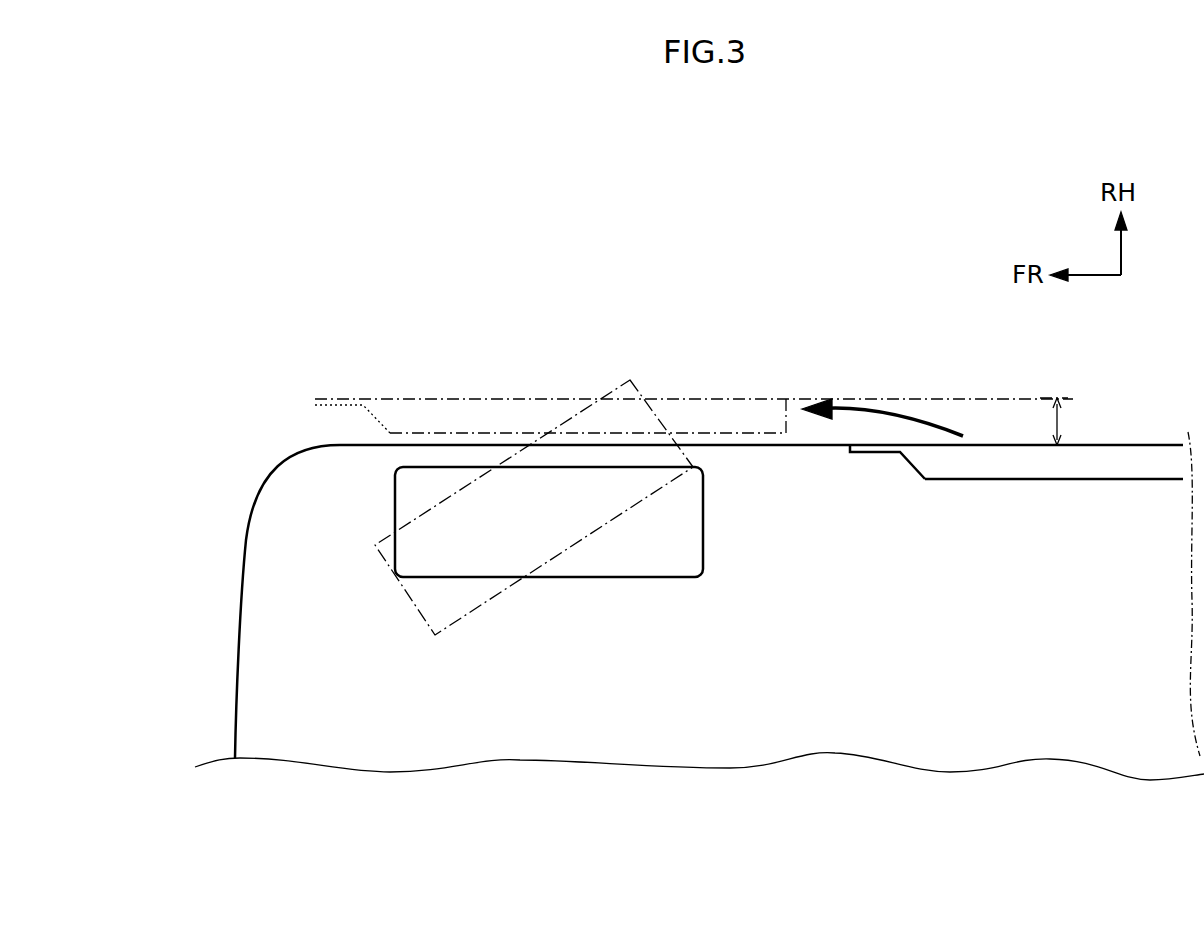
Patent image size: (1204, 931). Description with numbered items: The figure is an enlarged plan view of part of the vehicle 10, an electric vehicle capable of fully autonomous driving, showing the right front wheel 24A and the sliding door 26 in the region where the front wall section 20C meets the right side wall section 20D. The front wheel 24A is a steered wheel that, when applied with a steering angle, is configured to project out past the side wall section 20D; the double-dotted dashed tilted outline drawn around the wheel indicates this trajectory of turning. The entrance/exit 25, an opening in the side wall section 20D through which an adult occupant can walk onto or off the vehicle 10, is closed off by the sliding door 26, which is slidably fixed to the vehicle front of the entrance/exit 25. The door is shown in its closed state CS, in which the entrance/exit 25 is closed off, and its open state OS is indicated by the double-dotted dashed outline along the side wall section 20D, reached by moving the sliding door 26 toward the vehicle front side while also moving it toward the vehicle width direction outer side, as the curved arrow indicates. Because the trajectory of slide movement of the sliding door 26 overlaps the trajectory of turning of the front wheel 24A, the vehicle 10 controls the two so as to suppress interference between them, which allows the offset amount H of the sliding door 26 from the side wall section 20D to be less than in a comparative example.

The vehicle 10 is at (962, 196).
The front wall section 20C is at (238, 598).
The side wall section 20D is at (410, 443).
The front wheel 24A is at (630, 558).
The entrance/exit 25 is at (868, 452).
The sliding door 26 is at (723, 410).
The open state OS is at (478, 410).
The closed state CS is at (1100, 463).
The offset amount H is at (1072, 421).